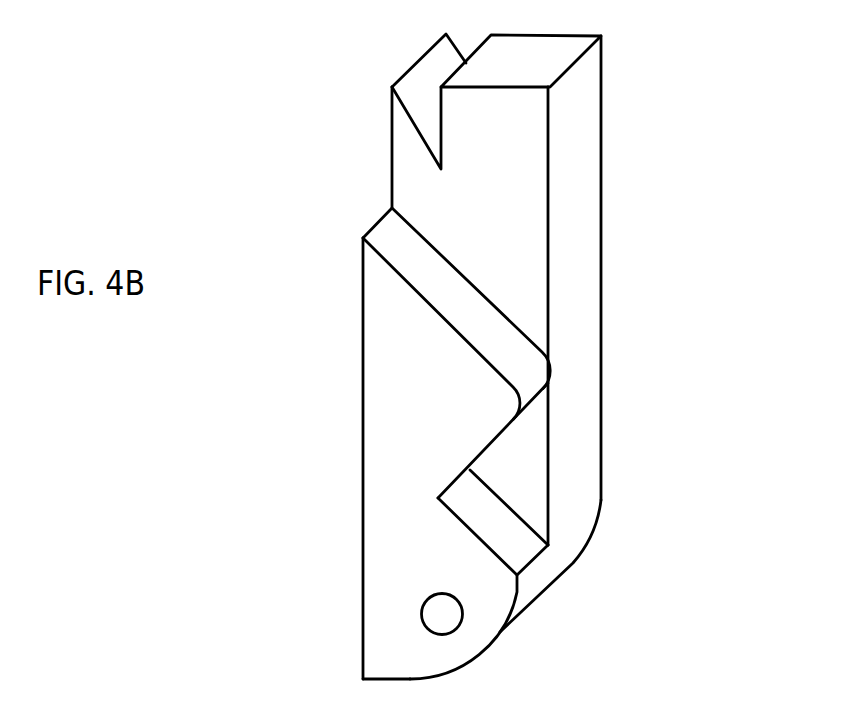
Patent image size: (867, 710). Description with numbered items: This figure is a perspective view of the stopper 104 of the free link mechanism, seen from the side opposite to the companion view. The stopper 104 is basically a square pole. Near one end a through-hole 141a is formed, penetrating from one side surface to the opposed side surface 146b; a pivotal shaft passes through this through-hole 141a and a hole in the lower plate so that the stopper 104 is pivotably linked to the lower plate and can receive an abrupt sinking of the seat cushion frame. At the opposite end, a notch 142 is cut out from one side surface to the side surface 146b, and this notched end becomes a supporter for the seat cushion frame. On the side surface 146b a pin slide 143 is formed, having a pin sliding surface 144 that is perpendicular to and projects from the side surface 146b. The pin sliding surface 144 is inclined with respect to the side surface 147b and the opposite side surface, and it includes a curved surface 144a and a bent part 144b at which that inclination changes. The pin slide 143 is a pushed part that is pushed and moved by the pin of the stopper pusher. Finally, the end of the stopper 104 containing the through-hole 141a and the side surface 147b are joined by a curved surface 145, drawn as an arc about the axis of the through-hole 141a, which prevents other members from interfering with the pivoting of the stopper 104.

The stopper 104 is at (640, 148).
The through-hole 141a is at (438, 617).
The notch 142 is at (430, 78).
The pin slide 143 is at (380, 327).
The pin sliding surface 144 is at (465, 310).
The curved surface 144a is at (528, 388).
The bent part 144b is at (457, 487).
The curved surface 145 is at (517, 612).
The side surface 146b is at (468, 188).
The side surface 147b is at (573, 227).